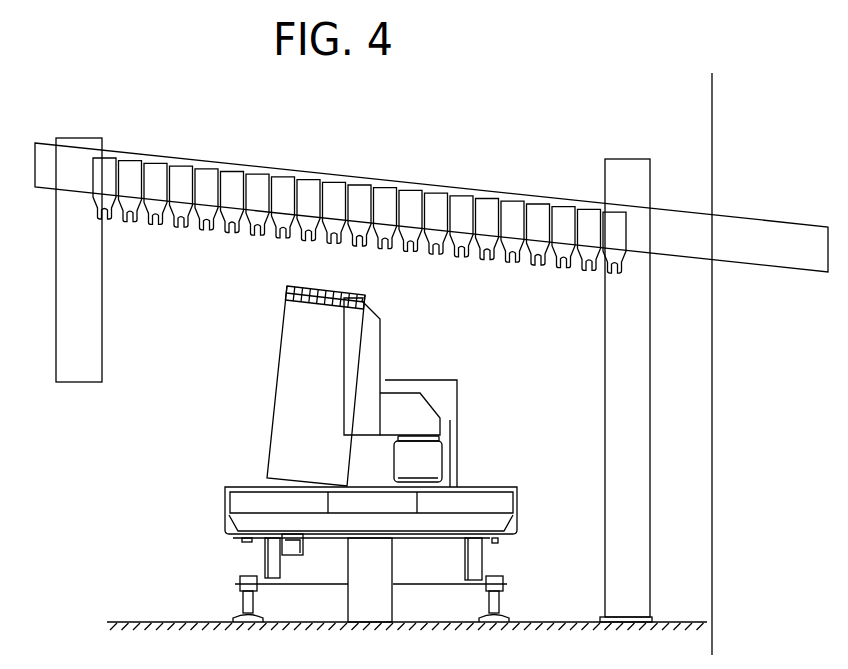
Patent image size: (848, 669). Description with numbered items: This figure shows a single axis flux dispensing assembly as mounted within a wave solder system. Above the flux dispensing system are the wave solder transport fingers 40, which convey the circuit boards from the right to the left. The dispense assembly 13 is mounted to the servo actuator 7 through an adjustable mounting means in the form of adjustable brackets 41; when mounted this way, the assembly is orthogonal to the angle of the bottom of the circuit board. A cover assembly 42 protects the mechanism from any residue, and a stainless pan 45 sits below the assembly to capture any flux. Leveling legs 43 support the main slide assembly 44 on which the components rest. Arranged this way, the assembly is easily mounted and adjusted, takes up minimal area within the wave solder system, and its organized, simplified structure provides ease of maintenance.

The wave solder transport fingers 40 is at (412, 212).
The dispense assembly 13 is at (293, 332).
The adjustable brackets 41 is at (373, 353).
The cover assembly 42 is at (458, 380).
The servo actuator 7 is at (442, 445).
The main slide assembly 44 is at (518, 502).
The stainless pan 45 is at (248, 480).
The leveling legs 43 is at (500, 597).